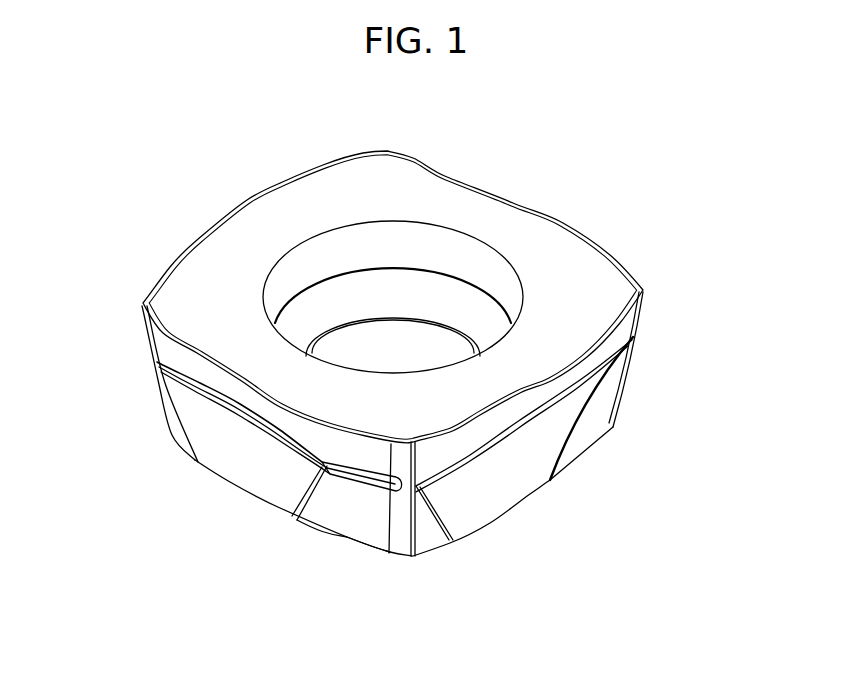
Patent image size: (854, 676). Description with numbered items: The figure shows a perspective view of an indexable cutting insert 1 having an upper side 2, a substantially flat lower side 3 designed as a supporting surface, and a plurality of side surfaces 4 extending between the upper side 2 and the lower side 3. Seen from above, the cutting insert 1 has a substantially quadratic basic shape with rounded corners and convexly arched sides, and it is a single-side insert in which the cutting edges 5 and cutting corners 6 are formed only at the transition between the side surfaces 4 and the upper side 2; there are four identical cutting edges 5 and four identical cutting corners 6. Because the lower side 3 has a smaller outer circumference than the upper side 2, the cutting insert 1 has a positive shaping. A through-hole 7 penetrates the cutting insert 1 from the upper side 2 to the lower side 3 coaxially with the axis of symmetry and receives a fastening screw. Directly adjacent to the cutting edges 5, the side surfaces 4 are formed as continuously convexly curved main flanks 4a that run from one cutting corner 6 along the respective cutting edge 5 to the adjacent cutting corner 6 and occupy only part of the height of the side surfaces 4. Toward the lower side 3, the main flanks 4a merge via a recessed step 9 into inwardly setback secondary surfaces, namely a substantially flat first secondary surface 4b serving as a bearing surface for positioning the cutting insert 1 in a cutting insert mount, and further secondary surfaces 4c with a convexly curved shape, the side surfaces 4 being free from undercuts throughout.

The indexable cutting insert 1 is at (132, 150).
The upper side 2 is at (547, 272).
The lower side 3 is at (494, 534).
The side surfaces 4 is at (240, 458).
The main flanks 4a is at (195, 366).
The first secondary surface 4b is at (267, 477).
The further secondary surfaces 4c is at (348, 517).
The cutting edges 5 is at (250, 202).
The cutting corners 6 is at (384, 150).
The through-hole 7 is at (428, 297).
The step 9 is at (347, 475).